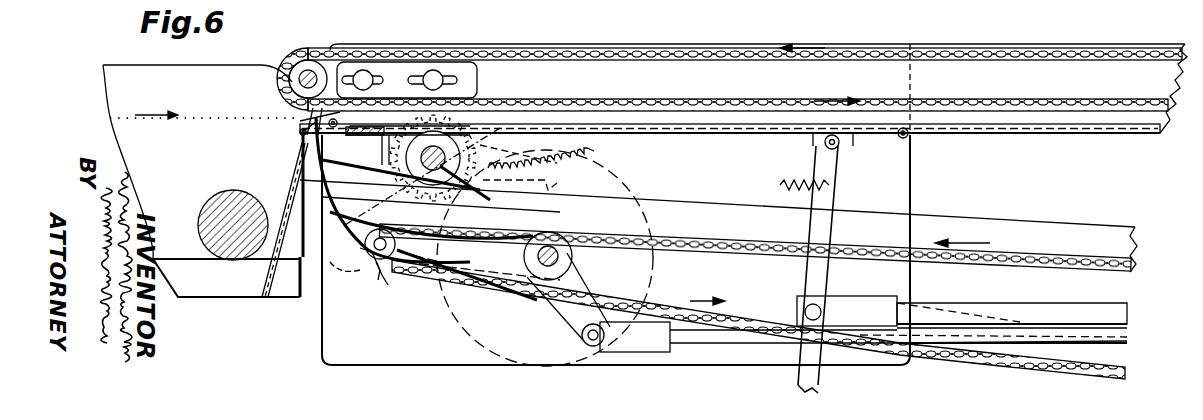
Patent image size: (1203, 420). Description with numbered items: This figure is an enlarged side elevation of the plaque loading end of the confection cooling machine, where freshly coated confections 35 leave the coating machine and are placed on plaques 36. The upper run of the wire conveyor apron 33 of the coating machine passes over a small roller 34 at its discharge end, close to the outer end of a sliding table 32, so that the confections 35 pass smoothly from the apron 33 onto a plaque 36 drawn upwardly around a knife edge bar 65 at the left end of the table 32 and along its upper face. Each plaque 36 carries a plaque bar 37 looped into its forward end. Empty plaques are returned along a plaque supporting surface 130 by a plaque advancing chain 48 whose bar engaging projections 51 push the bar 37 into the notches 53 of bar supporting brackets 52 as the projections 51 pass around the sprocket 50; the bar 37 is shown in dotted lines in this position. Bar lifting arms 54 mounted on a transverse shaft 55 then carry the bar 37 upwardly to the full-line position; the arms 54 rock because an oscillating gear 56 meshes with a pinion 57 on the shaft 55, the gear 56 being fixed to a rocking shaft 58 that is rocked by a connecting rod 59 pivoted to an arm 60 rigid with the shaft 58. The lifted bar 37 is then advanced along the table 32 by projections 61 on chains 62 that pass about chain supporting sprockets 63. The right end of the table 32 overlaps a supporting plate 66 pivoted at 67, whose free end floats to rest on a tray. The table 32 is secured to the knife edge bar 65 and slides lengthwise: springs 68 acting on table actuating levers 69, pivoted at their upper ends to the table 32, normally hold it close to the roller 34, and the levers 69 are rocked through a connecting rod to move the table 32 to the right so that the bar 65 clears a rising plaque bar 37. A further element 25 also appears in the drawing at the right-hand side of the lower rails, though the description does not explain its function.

The guide rail 25 is at (990, 311).
The table 32 is at (641, 126).
The wire conveyor apron 33 is at (162, 118).
The roller 34 is at (300, 131).
The confections 35 is at (318, 256).
The plaque 36 is at (308, 177).
The plaque bar 37 is at (335, 122).
The plaque advancing chain 48 is at (735, 237).
The sprocket 50 is at (372, 268).
The bar engaging projection 51 is at (382, 270).
The bar supporting bracket 52 is at (425, 250).
The notch 53 is at (362, 258).
The bar lifting arm 54 is at (312, 160).
The shaft 55 is at (464, 182).
The gear 56 is at (640, 172).
The pinion 57 is at (473, 140).
The rocking shaft 58 is at (530, 263).
The connecting rod 59 is at (722, 350).
The arm 60 is at (562, 314).
The projection 61 is at (300, 113).
The chain 62 is at (592, 47).
The chain supporting sprocket 63 is at (318, 60).
The knife edge bar 65 is at (408, 146).
The supporting plate 66 is at (1050, 134).
The pivot 67 is at (907, 138).
The spring 68 is at (800, 183).
The table actuating lever 69 is at (838, 182).
The plaque supporting surface 130 is at (492, 272).